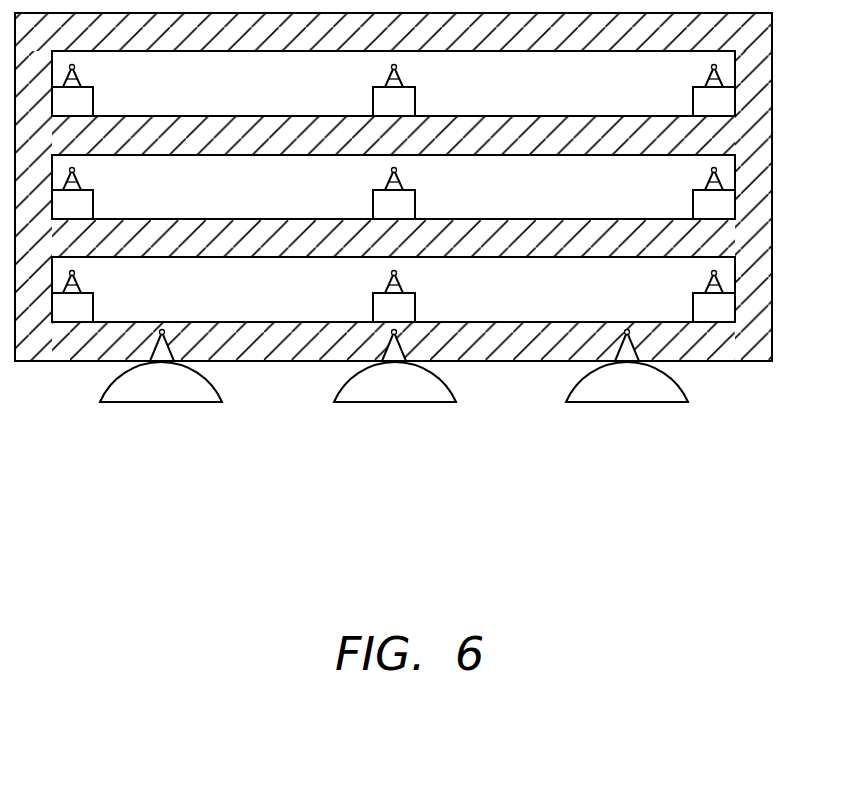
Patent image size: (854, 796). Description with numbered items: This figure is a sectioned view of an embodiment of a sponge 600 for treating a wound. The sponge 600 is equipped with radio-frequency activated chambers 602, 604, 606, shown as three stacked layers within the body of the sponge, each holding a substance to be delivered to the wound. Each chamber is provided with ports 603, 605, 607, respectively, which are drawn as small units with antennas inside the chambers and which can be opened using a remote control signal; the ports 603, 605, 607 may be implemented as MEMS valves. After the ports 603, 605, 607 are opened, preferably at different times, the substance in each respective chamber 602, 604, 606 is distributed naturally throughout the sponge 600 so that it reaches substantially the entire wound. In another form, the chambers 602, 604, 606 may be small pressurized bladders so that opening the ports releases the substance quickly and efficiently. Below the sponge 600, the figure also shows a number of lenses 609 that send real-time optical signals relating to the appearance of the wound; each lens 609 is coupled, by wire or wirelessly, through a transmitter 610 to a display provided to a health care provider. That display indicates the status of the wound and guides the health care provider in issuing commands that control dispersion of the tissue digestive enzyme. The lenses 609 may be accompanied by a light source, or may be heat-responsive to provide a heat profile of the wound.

The sponge 600 is at (403, 513).
The RF activated chamber 602 is at (496, 328).
The RF activated chamber 604 is at (607, 222).
The RF activated chamber 606 is at (607, 119).
The port 603 is at (93, 302).
The port 605 is at (93, 199).
The port 607 is at (93, 96).
The lens 609 is at (132, 403).
The transmitter 610 is at (167, 342).